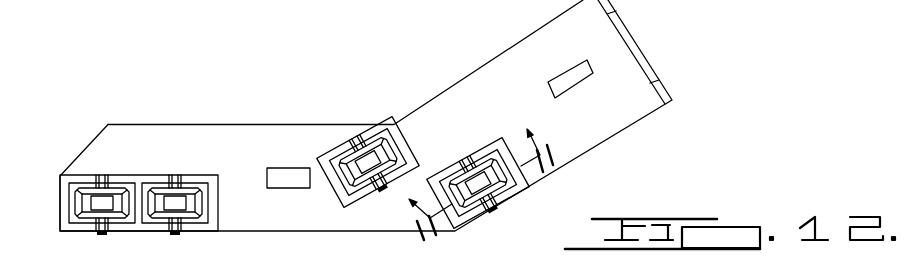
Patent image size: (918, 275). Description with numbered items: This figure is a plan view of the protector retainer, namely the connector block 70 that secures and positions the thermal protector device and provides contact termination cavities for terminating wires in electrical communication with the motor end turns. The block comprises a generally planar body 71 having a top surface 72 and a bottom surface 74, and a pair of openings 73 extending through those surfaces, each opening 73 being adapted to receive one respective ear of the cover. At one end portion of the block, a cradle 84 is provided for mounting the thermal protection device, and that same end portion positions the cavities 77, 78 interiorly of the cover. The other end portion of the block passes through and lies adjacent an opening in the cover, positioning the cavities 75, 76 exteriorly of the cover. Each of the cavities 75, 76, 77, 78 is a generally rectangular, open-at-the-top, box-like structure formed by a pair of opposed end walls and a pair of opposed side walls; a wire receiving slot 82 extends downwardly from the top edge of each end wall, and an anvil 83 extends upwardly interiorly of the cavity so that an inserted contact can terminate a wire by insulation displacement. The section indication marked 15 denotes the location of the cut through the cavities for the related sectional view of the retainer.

The section line 15- 15 is at (407, 200).
The connector block 70 is at (125, 106).
The generally planar body 71 is at (106, 151).
The top surface 72 is at (182, 136).
The opening 73 is at (282, 172).
The bottom surface 74 is at (176, 253).
The contact termination cavity 75 is at (68, 230).
The contact termination cavity 76 is at (150, 232).
The contact termination cavity 77 is at (337, 145).
The contact termination cavity 78 is at (478, 222).
The wire receiving slot 82 is at (466, 164).
The anvil 83 is at (97, 202).
The cradle 84 is at (660, 52).